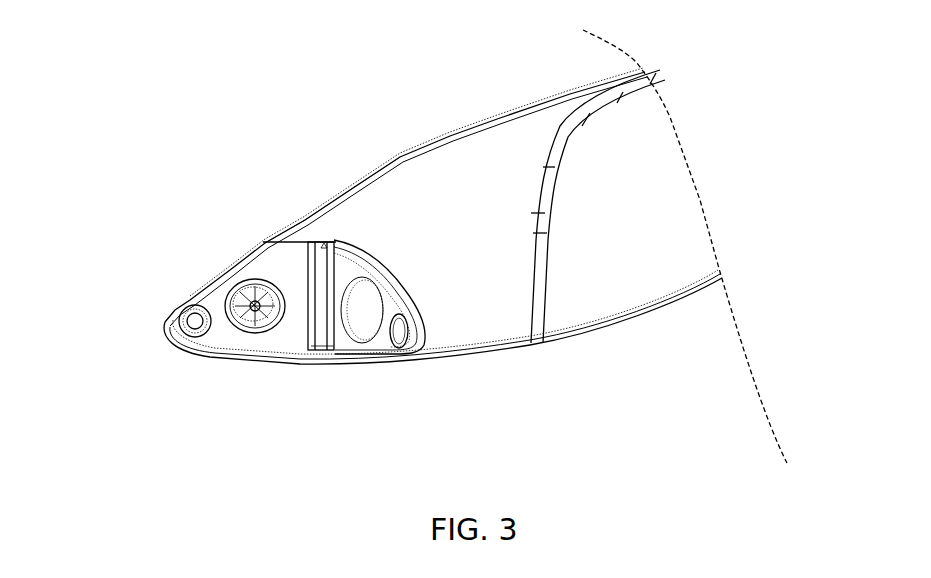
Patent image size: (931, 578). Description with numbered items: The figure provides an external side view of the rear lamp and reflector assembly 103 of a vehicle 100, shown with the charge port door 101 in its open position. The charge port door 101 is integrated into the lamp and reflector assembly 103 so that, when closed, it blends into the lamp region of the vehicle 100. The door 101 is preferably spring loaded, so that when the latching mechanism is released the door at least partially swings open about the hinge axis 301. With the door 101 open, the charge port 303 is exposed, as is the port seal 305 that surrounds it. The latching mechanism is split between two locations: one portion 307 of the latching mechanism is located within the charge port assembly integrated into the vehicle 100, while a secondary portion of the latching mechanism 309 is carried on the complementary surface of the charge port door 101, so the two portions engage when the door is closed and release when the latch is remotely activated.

The vehicle 100 is at (106, 236).
The charge port door 101 is at (384, 266).
The rear vehicle lamp and reflector assembly 103 is at (587, 242).
The hinge axis 301 is at (317, 325).
The charge port 303 is at (243, 307).
The port seal 305 is at (355, 307).
The portion of the latching mechanism 307 is at (192, 322).
The secondary portion of the latching mechanism 309 is at (400, 332).